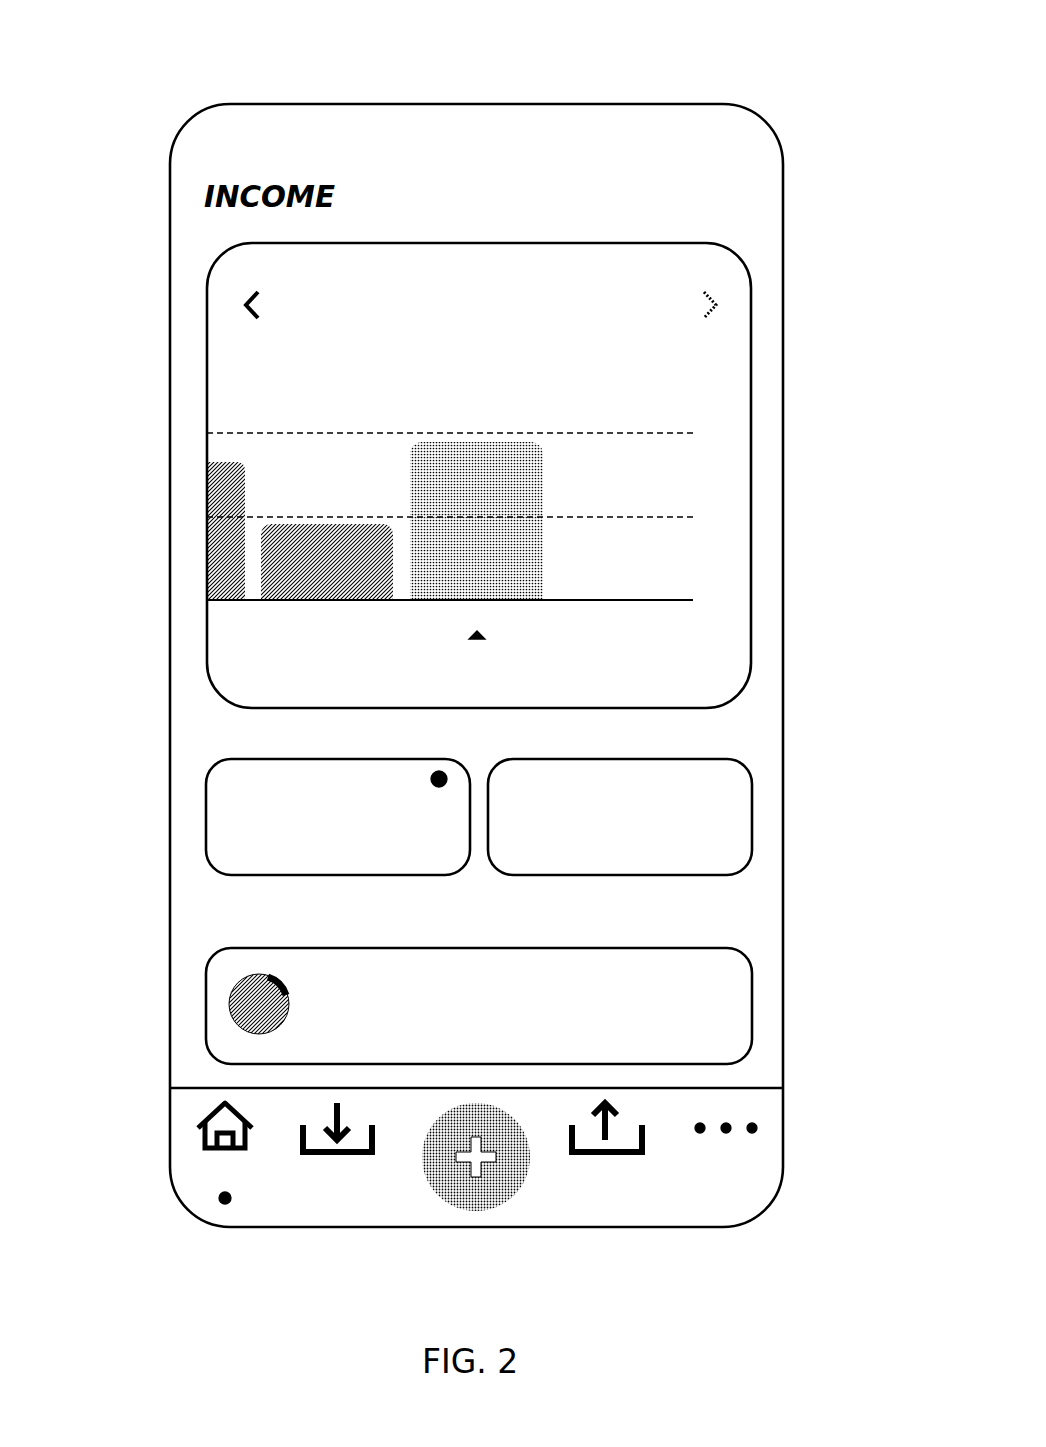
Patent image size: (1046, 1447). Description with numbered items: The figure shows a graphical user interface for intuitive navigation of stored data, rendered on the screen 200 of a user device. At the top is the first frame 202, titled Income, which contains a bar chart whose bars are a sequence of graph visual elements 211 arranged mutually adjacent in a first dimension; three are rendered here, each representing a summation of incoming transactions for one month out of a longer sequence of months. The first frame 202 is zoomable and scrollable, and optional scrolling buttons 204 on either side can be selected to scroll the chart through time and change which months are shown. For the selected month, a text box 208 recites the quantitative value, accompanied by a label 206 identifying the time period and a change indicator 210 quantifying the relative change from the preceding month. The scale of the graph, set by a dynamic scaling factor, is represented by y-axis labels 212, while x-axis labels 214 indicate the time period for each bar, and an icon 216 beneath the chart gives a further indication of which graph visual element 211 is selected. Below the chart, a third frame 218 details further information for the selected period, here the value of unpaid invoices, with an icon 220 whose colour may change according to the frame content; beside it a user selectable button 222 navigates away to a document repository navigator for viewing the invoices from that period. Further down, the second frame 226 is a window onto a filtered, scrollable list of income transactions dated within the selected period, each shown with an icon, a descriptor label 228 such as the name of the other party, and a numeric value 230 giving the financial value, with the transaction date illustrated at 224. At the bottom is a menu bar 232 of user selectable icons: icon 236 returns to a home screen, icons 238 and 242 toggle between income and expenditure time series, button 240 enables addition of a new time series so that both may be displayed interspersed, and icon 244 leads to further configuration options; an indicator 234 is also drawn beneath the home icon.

The screen 200 is at (173, 72).
The first frame 202 is at (683, 237).
The scrolling buttons 204 is at (240, 300).
The label 206 is at (488, 268).
The text box 208 is at (542, 305).
The change indicator 210 is at (572, 357).
The graph visual elements 211 is at (440, 492).
The y-axis labels 212 is at (465, 556).
The x-axis labels 214 is at (305, 618).
The icon 216 is at (495, 638).
The third frame 218 is at (204, 836).
The icon 220 is at (452, 773).
The user selectable button 222 is at (757, 800).
The date of the displayed transaction 224 is at (213, 925).
The second frame 226 is at (196, 1002).
The descriptor label 228 is at (430, 1010).
The numeric value 230 is at (728, 990).
The menu bar 232 is at (150, 1162).
The active tab indicator 234 is at (215, 1205).
The icon 236 is at (262, 1188).
The icon 238 is at (358, 1188).
The button 240 is at (515, 1207).
The icon 242 is at (630, 1192).
The icon 244 is at (762, 1158).